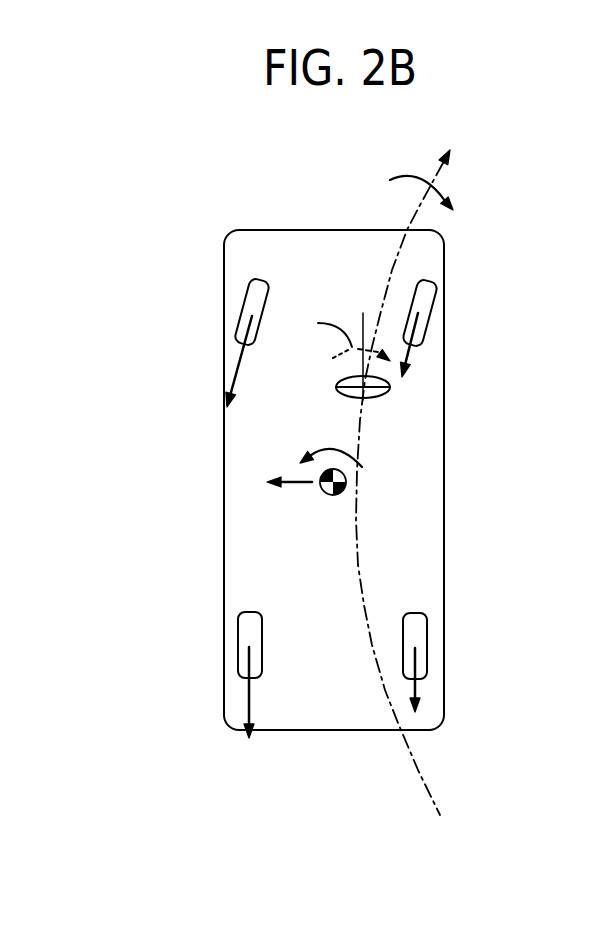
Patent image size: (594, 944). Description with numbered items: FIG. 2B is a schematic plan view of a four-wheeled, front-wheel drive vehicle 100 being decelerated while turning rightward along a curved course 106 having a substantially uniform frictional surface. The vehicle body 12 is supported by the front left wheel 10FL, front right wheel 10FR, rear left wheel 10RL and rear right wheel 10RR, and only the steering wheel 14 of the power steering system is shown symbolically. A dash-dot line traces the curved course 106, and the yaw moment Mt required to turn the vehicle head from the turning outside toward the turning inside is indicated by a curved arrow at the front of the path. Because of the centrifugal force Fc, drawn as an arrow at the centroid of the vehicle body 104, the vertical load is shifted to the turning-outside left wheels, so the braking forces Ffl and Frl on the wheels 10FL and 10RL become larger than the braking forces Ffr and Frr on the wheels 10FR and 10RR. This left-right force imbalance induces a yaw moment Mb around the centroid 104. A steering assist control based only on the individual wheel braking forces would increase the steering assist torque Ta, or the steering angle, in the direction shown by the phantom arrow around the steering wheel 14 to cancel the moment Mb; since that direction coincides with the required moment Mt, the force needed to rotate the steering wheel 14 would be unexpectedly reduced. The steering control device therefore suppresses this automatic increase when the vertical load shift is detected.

The vehicle 100 is at (291, 453).
The vehicle body 12 is at (223, 552).
The front left wheel 10FL is at (244, 293).
The front right wheel 10FR is at (433, 305).
The rear left wheel 10RL is at (238, 635).
The rear right wheel 10RR is at (427, 628).
The steering wheel 14 is at (377, 396).
The centroid of the vehicle body 104 is at (338, 488).
The curved course 106 is at (425, 783).
The yaw moment required for turning Mt is at (396, 187).
The yaw moment induced by force imbalance Mb is at (355, 460).
The centrifugal force Fc is at (289, 497).
The braking force on front left wheel Ffl is at (240, 357).
The braking force on front right wheel Ffr is at (405, 353).
The braking force on rear left wheel Frl is at (247, 710).
The braking force on rear right wheel Frr is at (412, 685).
The steering assist torque Ta is at (338, 364).